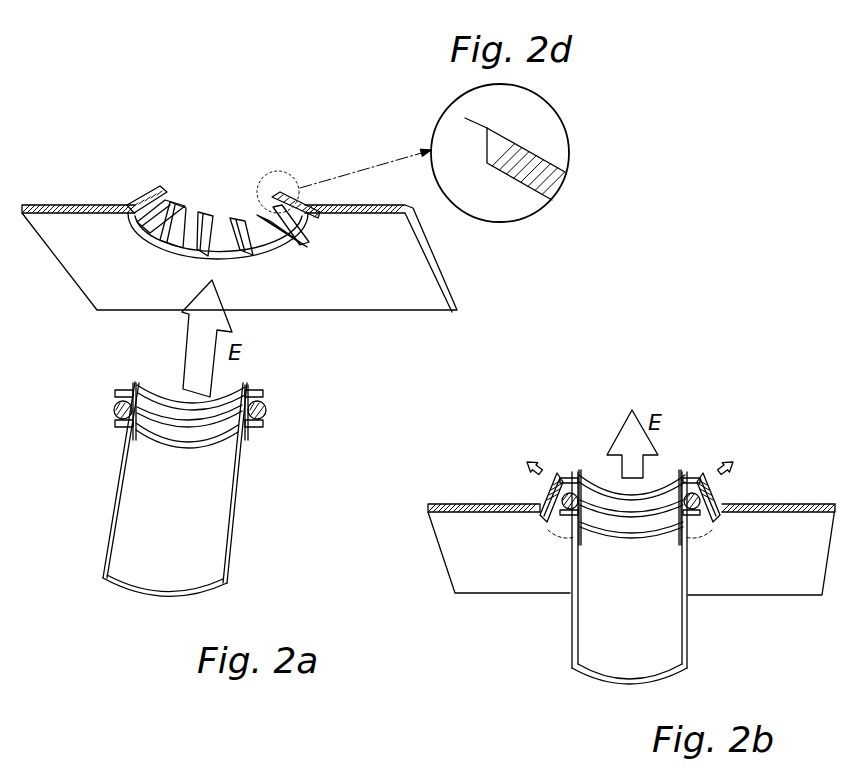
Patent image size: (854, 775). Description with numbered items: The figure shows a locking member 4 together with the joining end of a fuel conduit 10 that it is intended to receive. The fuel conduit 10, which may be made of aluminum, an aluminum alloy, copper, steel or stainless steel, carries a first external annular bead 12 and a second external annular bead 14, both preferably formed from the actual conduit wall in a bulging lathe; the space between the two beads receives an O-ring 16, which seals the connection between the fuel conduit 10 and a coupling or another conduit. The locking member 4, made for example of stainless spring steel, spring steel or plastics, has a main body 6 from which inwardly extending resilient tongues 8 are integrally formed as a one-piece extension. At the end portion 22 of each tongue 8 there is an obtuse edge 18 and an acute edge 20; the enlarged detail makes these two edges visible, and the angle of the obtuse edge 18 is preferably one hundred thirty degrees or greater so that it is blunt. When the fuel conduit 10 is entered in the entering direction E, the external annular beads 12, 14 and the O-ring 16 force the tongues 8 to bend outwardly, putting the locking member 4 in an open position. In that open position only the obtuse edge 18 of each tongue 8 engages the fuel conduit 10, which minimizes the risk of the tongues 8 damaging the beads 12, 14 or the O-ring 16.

In FIG. 2B, the locking member 4 is at (787, 573).
In FIG. 2A, the main body 6 is at (403, 257).
In FIG. 2B, the main body 6 is at (757, 557).
In FIG. 2A, the resilient tongues 8 is at (237, 237).
In FIG. 2A, the fuel conduit 10 is at (235, 518).
In FIG. 2B, the fuel conduit 10 is at (690, 612).
In FIG. 2A, the first external annular bead 12 is at (263, 402).
In FIG. 2B, the first external annular bead 12 is at (697, 480).
In FIG. 2A, the second external annular bead 14 is at (252, 440).
In FIG. 2B, the second external annular bead 14 is at (566, 528).
In FIG. 2A, the O-ring 16 is at (268, 418).
In FIG. 2B, the O-ring 16 is at (707, 507).
In FIG. 2A, the obtuse edge 18 is at (272, 195).
In FIG. 2D, the obtuse edge 18 is at (487, 163).
In FIG. 2A, the acute edge 20 is at (270, 192).
In FIG. 2D, the acute edge 20 is at (487, 128).
In FIG. 2A, the end portion 22 is at (180, 200).